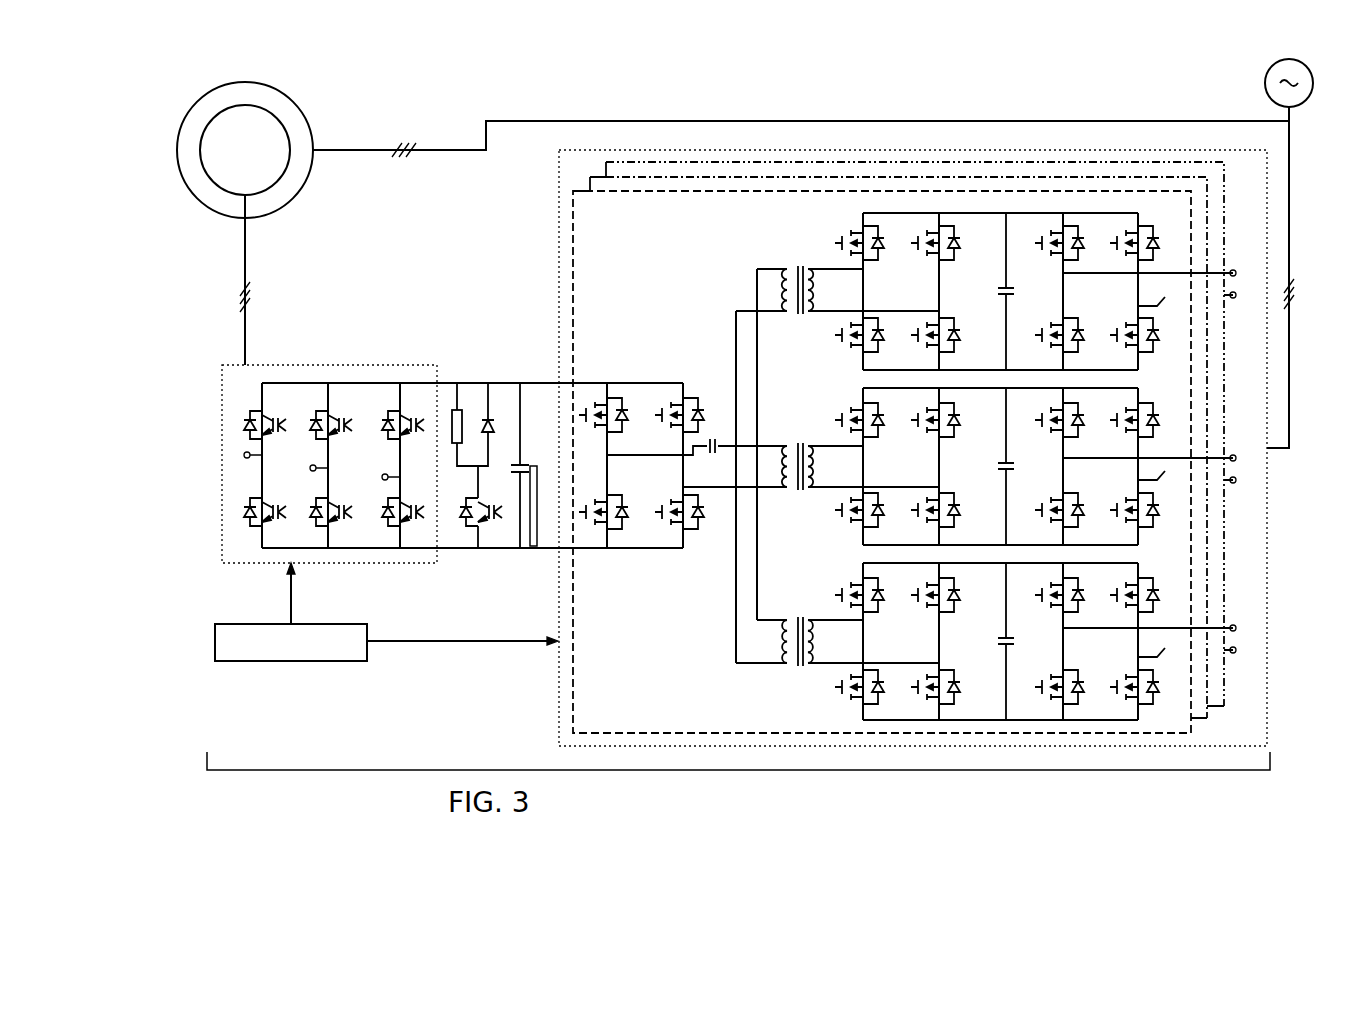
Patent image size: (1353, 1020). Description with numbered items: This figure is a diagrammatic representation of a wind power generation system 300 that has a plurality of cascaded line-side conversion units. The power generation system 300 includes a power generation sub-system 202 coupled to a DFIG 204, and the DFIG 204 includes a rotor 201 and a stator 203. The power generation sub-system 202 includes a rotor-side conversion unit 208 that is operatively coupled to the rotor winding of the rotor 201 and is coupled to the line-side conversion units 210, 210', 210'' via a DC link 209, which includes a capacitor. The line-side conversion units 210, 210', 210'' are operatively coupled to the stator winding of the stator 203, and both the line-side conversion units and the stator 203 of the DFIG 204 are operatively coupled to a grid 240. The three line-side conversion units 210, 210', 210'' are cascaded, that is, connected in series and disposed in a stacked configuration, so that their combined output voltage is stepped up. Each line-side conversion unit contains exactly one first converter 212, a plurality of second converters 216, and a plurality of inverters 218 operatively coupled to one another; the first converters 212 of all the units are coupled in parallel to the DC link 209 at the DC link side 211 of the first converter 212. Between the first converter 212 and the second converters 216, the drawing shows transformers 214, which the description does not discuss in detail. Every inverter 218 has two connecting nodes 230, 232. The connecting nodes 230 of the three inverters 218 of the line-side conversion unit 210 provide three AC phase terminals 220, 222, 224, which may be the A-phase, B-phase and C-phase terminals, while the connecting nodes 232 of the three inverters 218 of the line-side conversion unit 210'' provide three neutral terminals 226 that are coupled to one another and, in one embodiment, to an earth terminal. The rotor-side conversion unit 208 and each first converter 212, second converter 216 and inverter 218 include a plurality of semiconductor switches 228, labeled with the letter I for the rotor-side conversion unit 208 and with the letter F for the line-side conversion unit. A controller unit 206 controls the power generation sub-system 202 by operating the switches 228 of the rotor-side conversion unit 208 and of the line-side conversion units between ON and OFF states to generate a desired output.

The rotor 201 is at (297, 172).
The power generation sub-system 202 is at (738, 781).
The stator 203 is at (286, 208).
The DFIG 204 is at (274, 151).
The controller unit 206 is at (255, 661).
The rotor-side conversion unit 208 is at (310, 365).
The DC link 209 is at (518, 405).
The line-side conversion unit 210 is at (888, 448).
The line-side conversion unit 210' is at (859, 440).
The line-side conversion unit 210'' is at (867, 418).
The DC link side 211 is at (535, 548).
The first converter 212 is at (653, 533).
The transformers 214 is at (786, 312).
The second converters 216 is at (907, 406).
The inverters 218 is at (1113, 258).
The AC phase terminal 220 is at (1252, 255).
The AC phase terminal 222 is at (1252, 441).
The AC phase terminal 224 is at (1252, 611).
The neutral terminals 226 is at (1237, 484).
The semiconductor switches 228 is at (1053, 325).
The connecting node 230 is at (1063, 626).
The connecting node 232 is at (1138, 657).
The grid 240 is at (1266, 86).
The wind power generation system 300 is at (183, 718).